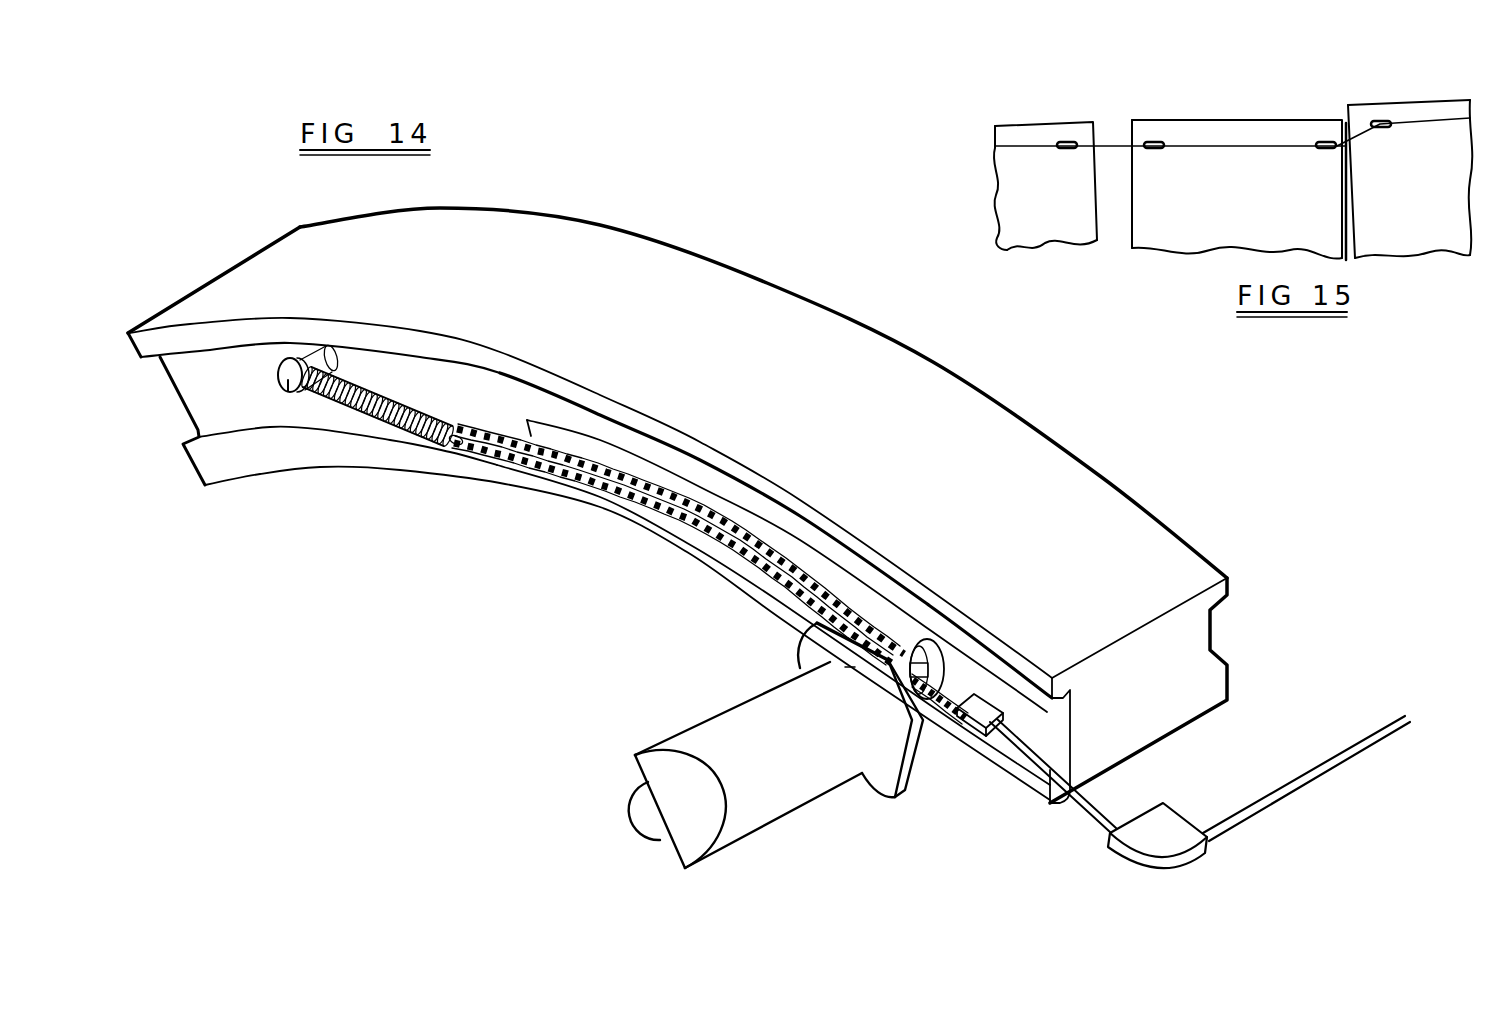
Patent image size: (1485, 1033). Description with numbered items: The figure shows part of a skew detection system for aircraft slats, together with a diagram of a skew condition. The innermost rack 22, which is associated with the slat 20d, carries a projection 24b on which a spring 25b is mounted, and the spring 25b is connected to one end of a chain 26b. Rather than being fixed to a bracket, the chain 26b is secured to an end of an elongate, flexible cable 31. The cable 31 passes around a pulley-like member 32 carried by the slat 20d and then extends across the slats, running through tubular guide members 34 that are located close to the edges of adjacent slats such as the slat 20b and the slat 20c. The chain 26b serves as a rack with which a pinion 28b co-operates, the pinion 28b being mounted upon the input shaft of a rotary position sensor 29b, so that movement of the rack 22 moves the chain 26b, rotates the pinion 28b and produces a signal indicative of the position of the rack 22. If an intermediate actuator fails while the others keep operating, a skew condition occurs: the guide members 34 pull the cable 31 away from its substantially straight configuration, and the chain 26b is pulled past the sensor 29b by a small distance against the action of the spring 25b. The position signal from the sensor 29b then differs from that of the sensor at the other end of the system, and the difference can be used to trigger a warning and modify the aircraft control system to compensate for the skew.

In FIG. 14, the rack 22 is at (792, 300).
In FIG. 14, the projection 24b is at (274, 390).
In FIG. 14, the spring 25b is at (389, 433).
In FIG. 14, the chain 26b is at (483, 457).
In FIG. 14, the pinion 28b is at (930, 715).
In FIG. 14, the rotary position sensor 29b is at (812, 787).
In FIG. 14, the cable 31 is at (1095, 808).
In FIG. 15, the cable 31 is at (1457, 117).
In FIG. 14, the member 32 is at (1170, 823).
In FIG. 15, the slat 20b is at (1405, 113).
In FIG. 15, the slat 20c is at (1242, 86).
In FIG. 15, the slat 20d is at (1067, 128).
In FIG. 15, the tubular guide members 34 is at (1380, 124).